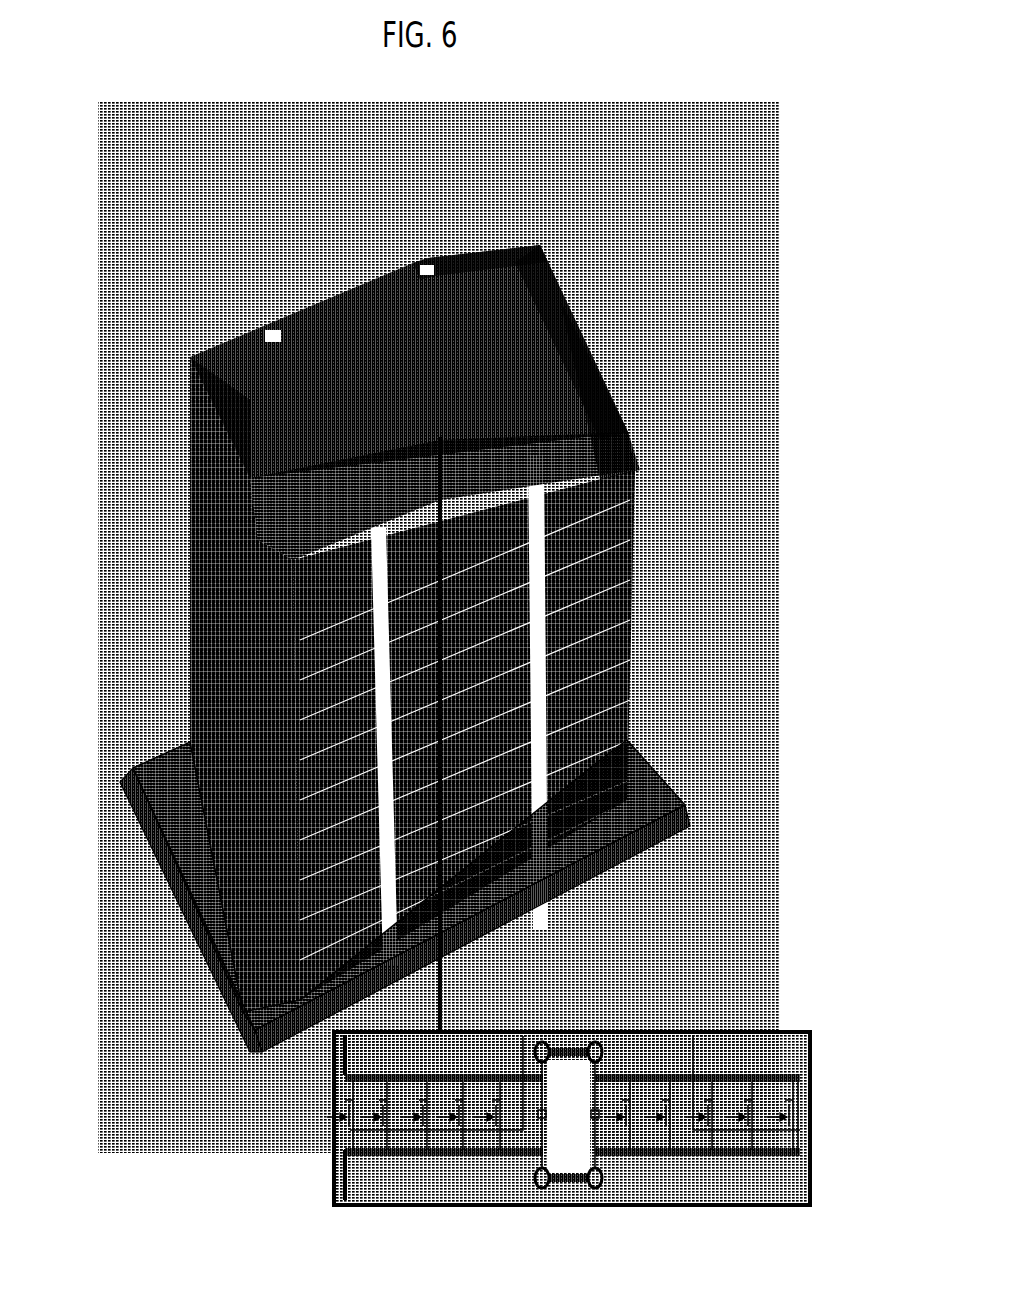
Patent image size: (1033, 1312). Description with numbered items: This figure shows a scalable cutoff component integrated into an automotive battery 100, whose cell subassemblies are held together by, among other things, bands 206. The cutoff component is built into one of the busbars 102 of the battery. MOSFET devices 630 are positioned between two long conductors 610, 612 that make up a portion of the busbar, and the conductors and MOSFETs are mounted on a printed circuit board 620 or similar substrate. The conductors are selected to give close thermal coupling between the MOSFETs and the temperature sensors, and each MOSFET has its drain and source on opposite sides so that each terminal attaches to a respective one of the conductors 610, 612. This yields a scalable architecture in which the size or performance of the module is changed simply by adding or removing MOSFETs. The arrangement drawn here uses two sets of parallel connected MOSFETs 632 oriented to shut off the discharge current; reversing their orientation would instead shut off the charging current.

The automotive battery 100 is at (397, 207).
The busbar 102 is at (245, 1022).
The bands 206 is at (485, 248).
The conductor 610 is at (575, 347).
The conductor 612 is at (572, 420).
The printed circuit board 620 is at (543, 282).
The MOSFET devices 630 is at (402, 446).
The parallel connected MOSFETs 632 is at (784, 1012).